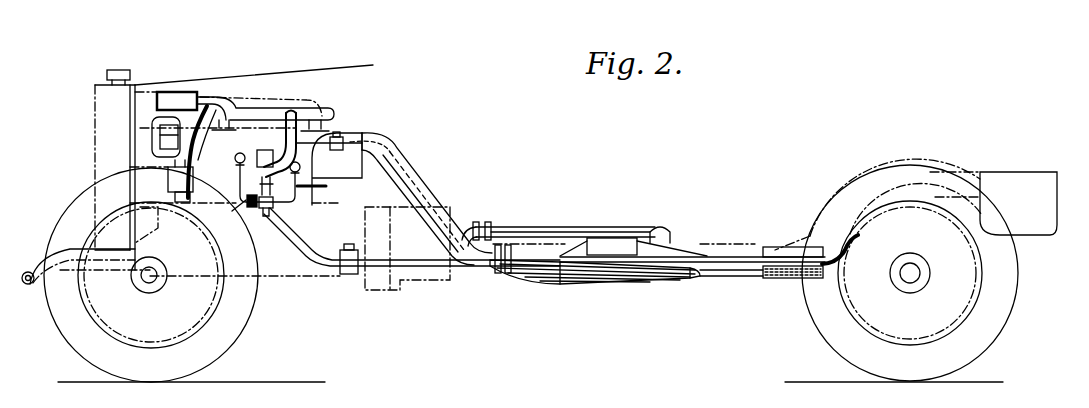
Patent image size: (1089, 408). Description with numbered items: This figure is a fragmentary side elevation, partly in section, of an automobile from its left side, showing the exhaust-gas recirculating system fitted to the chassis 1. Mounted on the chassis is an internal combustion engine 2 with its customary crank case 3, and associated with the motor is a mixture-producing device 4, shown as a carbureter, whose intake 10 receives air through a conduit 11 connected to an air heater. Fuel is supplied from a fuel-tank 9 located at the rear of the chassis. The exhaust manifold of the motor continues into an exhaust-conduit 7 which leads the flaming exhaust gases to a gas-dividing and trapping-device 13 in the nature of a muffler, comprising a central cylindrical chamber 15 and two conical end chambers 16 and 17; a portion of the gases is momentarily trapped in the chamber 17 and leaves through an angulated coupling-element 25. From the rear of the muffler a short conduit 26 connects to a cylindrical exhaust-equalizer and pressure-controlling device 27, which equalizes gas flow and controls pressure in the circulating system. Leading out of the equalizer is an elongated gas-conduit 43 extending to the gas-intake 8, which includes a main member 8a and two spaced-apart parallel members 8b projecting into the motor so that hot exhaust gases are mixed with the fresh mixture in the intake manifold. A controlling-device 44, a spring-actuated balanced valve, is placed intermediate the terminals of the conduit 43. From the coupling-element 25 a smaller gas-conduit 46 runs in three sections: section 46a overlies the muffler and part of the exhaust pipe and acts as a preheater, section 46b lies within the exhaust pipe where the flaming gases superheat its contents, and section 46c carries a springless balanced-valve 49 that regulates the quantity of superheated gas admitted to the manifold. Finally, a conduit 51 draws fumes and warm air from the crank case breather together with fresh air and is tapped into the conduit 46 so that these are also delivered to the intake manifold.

The chassis 1 is at (734, 300).
The internal combustion engine 2 is at (368, 140).
The crank case 3 is at (298, 270).
The mixture-producing device 4 is at (262, 150).
The exhaust-conduit 7 is at (394, 170).
The gas-intake 8 is at (235, 165).
The main member 8a is at (277, 207).
The parallel members 8b is at (285, 208).
The fuel-tank 9 is at (999, 183).
The intake 10 is at (256, 160).
The conduit 11 is at (313, 121).
The gas-dividing and trapping-device 13 is at (610, 244).
The central cylindrical chamber 15 is at (621, 282).
The conical end chamber 16 is at (577, 282).
The conical end chamber 17 is at (683, 279).
The angulated coupling-element 25 is at (668, 235).
The short conduit 26 is at (742, 252).
The exhaust-equalizer and pressure-controlling device 27 is at (788, 279).
The gas-conduit 43 is at (440, 272).
The controlling-device 44 is at (348, 275).
The gas-conduit 46 is at (535, 223).
The section 46a is at (584, 222).
The section 46b is at (433, 208).
The section 46c is at (372, 144).
The balanced-valve 49 is at (337, 136).
The conduit 51 is at (318, 166).